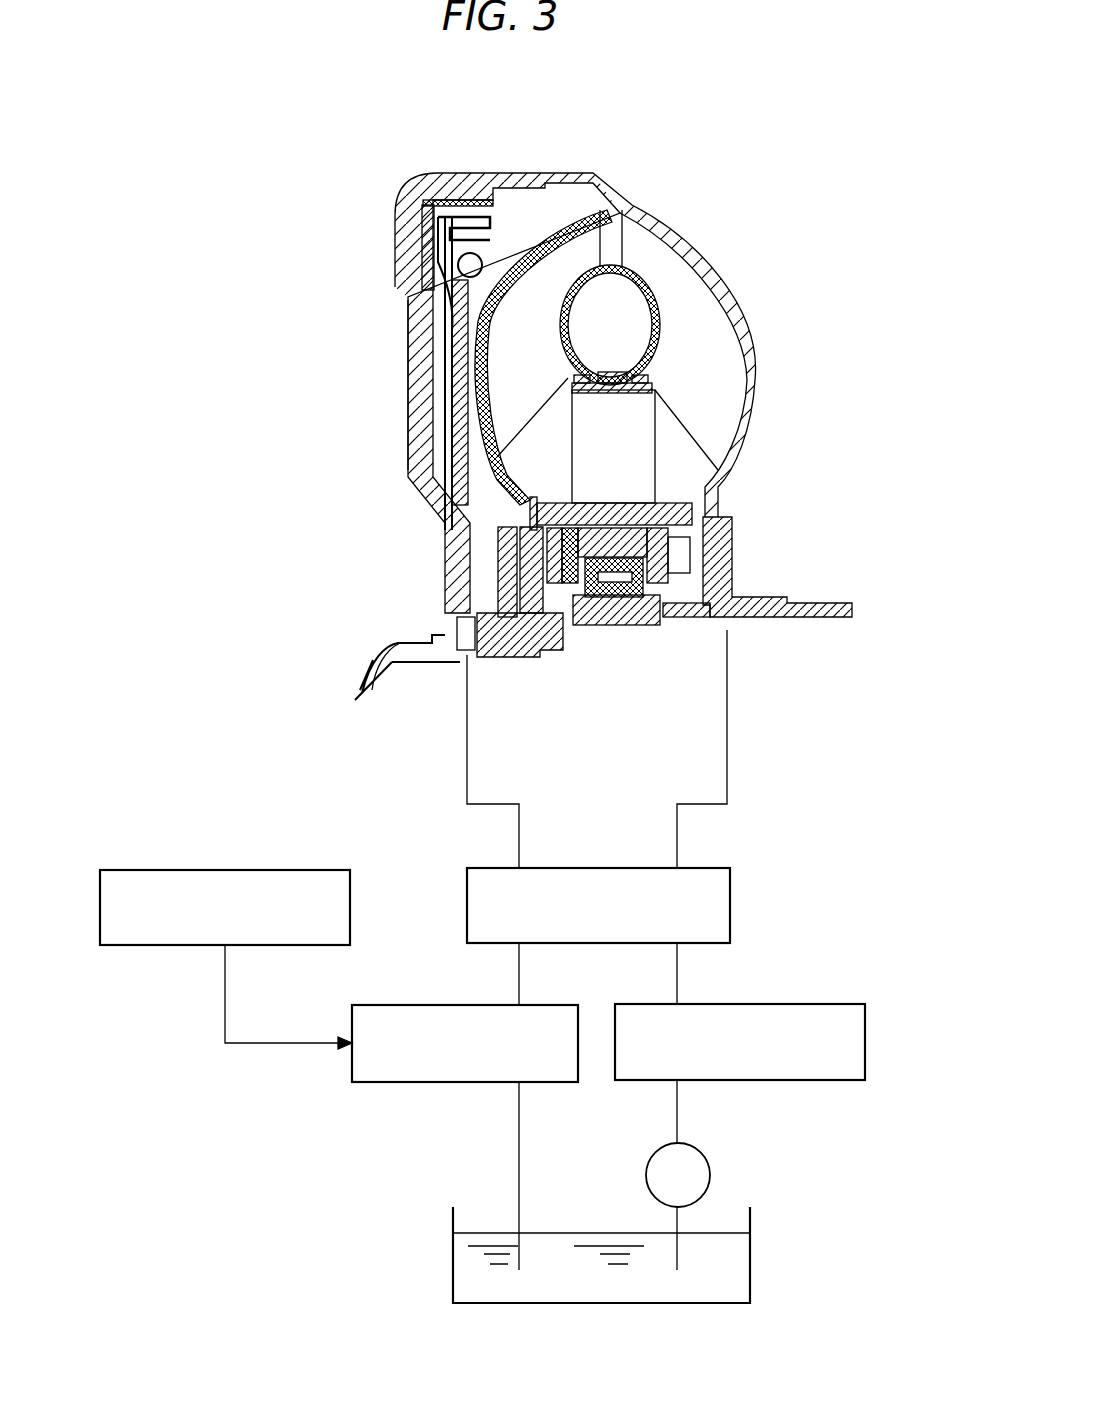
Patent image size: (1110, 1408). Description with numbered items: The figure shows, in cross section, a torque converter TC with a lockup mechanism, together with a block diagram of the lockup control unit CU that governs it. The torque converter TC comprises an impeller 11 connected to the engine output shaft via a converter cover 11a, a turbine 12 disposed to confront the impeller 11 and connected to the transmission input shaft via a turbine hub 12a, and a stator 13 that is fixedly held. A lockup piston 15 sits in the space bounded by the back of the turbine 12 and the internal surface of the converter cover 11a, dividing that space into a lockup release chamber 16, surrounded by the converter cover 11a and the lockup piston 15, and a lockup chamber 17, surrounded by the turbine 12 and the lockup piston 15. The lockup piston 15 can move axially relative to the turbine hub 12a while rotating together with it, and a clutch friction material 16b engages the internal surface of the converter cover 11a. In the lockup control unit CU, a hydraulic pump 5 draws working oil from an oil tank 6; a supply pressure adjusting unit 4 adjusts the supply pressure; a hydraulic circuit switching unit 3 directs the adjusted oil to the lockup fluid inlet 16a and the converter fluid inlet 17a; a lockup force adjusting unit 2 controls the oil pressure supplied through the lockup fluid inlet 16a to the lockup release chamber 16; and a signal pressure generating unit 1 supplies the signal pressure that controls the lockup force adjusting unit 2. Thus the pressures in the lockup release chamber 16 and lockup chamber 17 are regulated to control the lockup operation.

The signal pressure generating unit 1 is at (228, 870).
The lockup force adjusting unit 2 is at (407, 1005).
The hydraulic circuit switching unit 3 is at (732, 901).
The supply pressure adjusting unit 4 is at (867, 1038).
The hydraulic pump 5 is at (712, 1172).
The oil tank 6 is at (752, 1251).
The impeller 11 is at (683, 349).
The converter cover 11a is at (410, 385).
The turbine 12 is at (513, 349).
The turbine hub 12a is at (540, 633).
The stator 13 is at (599, 462).
The lockup piston 15 is at (462, 453).
The lockup release chamber 16 is at (435, 337).
The lockup fluid inlet 16a is at (457, 650).
The clutch friction material 16b is at (430, 247).
The lockup chamber 17 is at (528, 208).
The converter fluid inlet 17a is at (718, 615).
The torque converter TC is at (782, 222).
The lockup control unit CU is at (868, 826).